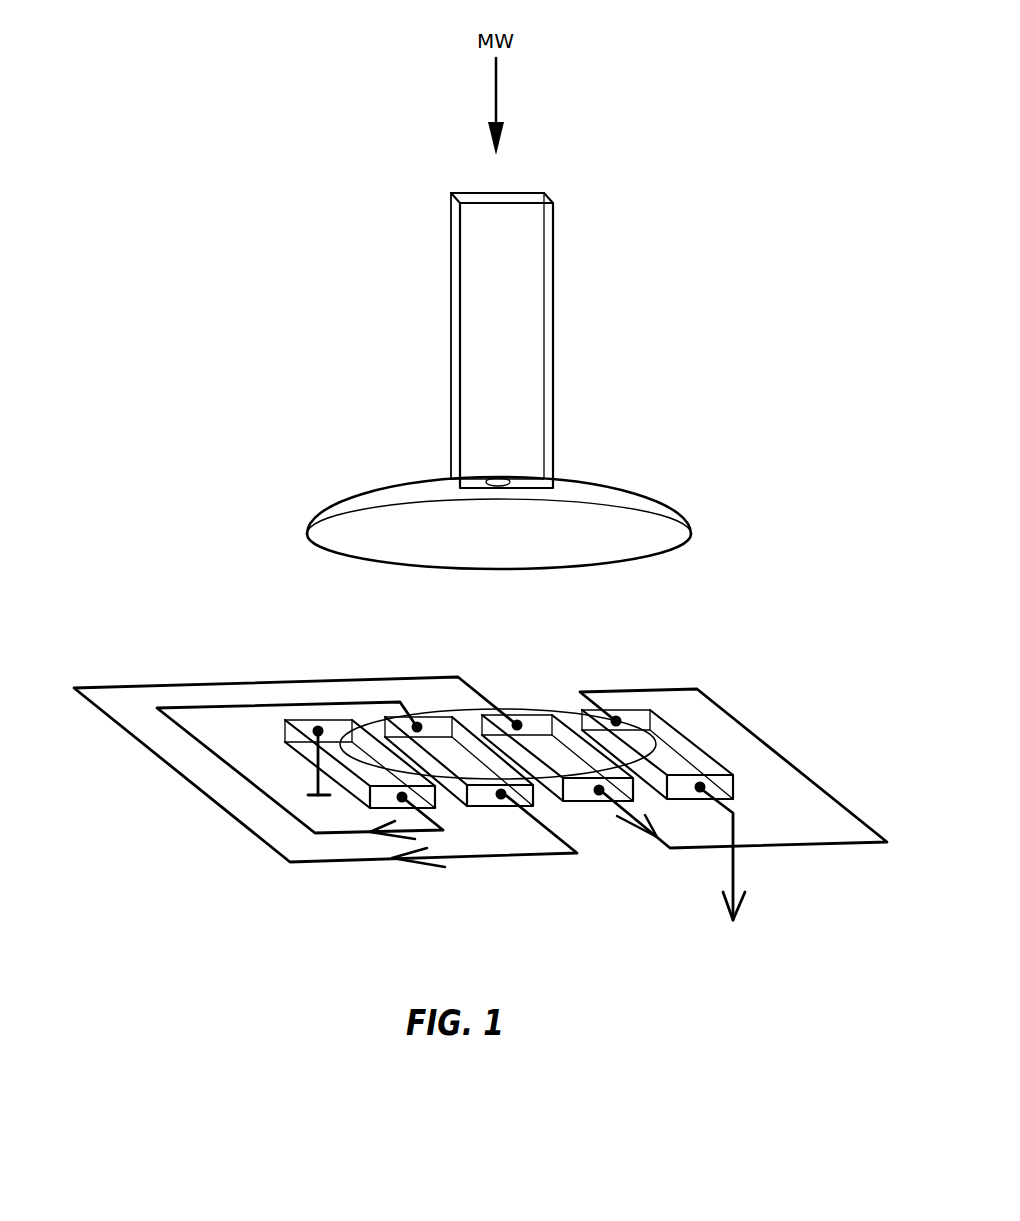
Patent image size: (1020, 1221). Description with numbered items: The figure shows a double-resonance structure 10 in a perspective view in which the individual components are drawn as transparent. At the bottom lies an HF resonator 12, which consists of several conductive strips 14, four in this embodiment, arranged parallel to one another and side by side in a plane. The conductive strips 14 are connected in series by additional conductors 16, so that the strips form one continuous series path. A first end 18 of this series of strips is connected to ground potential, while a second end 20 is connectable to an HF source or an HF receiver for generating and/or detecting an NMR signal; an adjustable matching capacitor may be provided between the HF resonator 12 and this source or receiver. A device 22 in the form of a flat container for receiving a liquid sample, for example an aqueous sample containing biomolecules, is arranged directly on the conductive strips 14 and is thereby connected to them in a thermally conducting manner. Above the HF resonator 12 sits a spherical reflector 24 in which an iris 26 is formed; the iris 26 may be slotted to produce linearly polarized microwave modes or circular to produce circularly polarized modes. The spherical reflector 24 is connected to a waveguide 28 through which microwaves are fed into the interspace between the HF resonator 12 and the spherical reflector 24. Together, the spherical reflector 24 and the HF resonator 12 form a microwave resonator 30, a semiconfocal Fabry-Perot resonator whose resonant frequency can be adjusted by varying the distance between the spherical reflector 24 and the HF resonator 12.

The double-resonance structure 10 is at (340, 232).
The HF resonator 12 is at (516, 690).
The conductive strips 14 is at (440, 712).
The additional conductors 16 is at (232, 772).
The first end 18 is at (313, 794).
The second end 20 is at (742, 903).
The device 22 is at (561, 708).
The spherical reflector 24 is at (618, 518).
The iris 26 is at (502, 478).
The waveguide 28 is at (523, 262).
The microwave resonator 30 is at (319, 619).